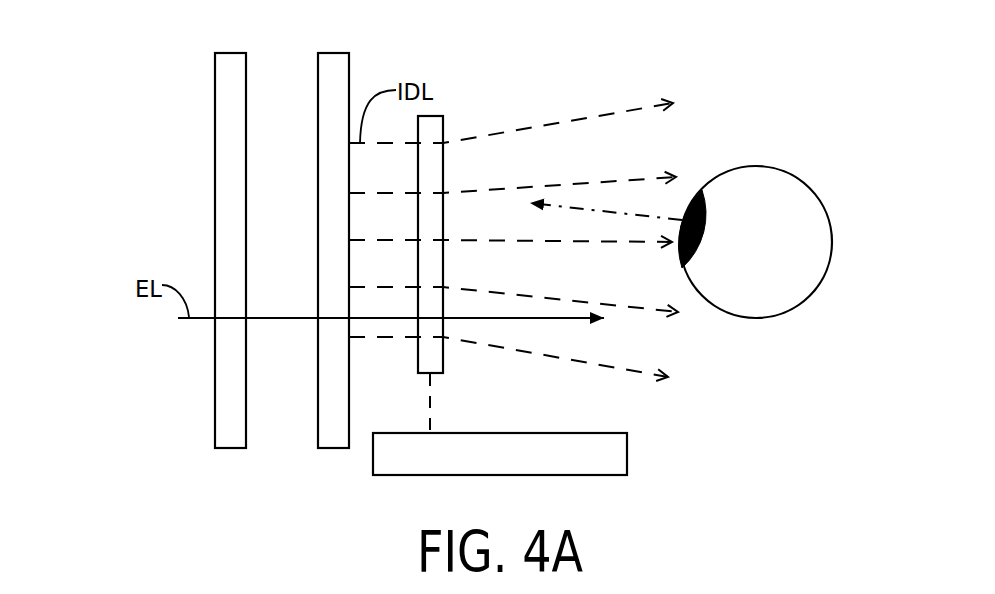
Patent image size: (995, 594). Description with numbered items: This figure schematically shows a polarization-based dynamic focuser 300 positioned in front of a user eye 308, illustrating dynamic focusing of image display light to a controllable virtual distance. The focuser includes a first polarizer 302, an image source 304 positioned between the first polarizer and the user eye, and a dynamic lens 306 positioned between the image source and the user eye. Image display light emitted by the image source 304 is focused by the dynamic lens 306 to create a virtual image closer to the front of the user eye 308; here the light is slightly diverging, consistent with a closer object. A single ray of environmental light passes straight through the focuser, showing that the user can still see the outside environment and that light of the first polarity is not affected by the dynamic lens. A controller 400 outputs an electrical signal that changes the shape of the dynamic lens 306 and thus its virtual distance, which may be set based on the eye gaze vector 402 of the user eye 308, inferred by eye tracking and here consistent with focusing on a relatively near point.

The polarization-based dynamic focuser 300 is at (130, 56).
The first polarizer 302 is at (215, 71).
The image source 304 is at (318, 72).
The dynamic lens 306 is at (443, 133).
The user eye 308 is at (788, 170).
The controller 400 is at (607, 466).
The eye gaze vector 402 is at (590, 211).